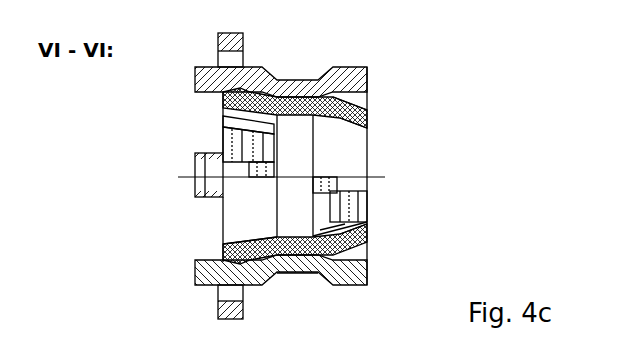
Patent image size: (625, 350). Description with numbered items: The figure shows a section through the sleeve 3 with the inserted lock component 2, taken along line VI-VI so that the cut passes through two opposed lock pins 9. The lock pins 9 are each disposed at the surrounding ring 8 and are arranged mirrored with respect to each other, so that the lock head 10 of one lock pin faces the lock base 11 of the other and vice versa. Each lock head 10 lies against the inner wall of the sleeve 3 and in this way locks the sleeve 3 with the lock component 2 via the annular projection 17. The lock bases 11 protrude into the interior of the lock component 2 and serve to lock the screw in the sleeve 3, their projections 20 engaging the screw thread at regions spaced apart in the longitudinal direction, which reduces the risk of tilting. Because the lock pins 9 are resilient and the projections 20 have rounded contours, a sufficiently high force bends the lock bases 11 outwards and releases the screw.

The lock component 2 is at (355, 158).
The sleeve 3 is at (341, 67).
The surrounding ring 8 is at (368, 201).
The lock pin 9 is at (258, 72).
The lock head 10 is at (222, 97).
The lock base 11 is at (368, 106).
The annular projection 17 is at (292, 262).
The projection 20 is at (357, 140).